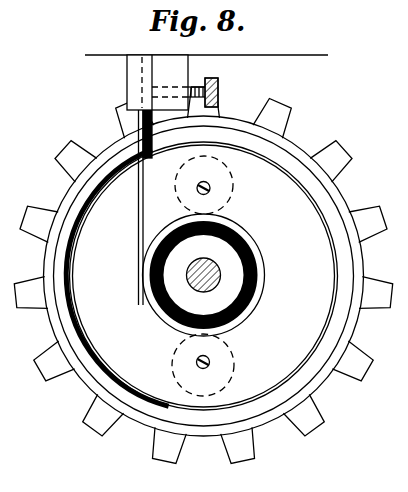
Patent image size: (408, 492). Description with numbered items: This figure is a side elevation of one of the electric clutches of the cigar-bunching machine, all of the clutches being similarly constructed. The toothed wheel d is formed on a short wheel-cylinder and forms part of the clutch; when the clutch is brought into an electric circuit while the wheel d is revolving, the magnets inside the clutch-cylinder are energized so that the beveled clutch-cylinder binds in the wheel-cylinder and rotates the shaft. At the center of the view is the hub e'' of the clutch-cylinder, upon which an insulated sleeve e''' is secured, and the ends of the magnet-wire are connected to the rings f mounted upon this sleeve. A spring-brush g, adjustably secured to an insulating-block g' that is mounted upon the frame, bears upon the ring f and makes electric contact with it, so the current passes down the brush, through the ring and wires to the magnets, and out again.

The wheel d is at (203, 275).
The hub e'' is at (213, 279).
The insulated sleeve e''' is at (196, 276).
The ring f is at (248, 307).
The spring-brush g is at (132, 207).
The insulating-block g' is at (206, 82).